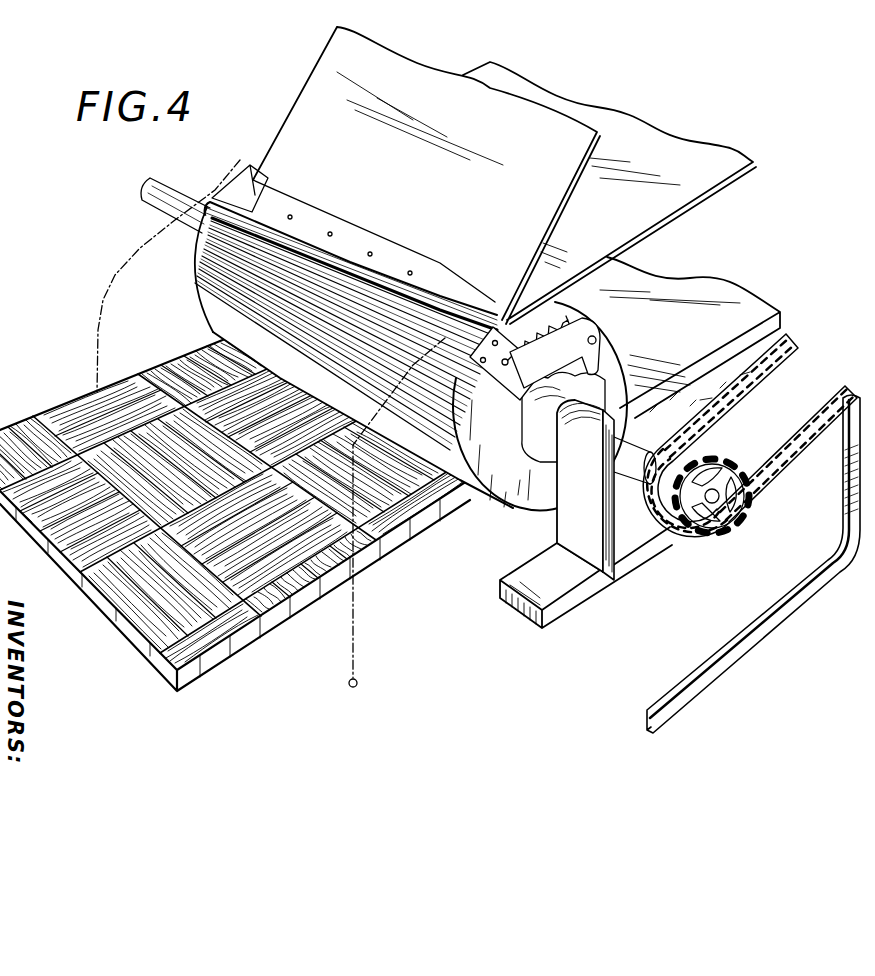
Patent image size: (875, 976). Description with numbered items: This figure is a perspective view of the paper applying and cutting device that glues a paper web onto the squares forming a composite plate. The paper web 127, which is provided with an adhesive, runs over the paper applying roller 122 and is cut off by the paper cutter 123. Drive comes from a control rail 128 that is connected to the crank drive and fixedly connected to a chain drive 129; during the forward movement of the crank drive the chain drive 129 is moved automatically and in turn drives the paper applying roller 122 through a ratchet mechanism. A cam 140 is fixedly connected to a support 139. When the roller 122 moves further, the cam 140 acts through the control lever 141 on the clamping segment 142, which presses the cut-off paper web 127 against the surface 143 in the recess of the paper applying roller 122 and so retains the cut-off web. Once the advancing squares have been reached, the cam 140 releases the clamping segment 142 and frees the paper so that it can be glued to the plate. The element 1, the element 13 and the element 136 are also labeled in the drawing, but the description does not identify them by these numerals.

The parquet panel 1 is at (35, 425).
The sprocket 13 is at (718, 518).
The paper applying roller 122 is at (205, 292).
The paper cutter 123 is at (240, 158).
The paper web 127 is at (677, 283).
The control rail 128 is at (753, 640).
The chain drive 129 is at (840, 388).
The abrasive sheet 136 is at (440, 77).
The support 139 is at (620, 560).
The cam 140 is at (545, 455).
The control lever 141 is at (594, 352).
The clamping segment 142 is at (507, 385).
The surface 143 is at (503, 307).